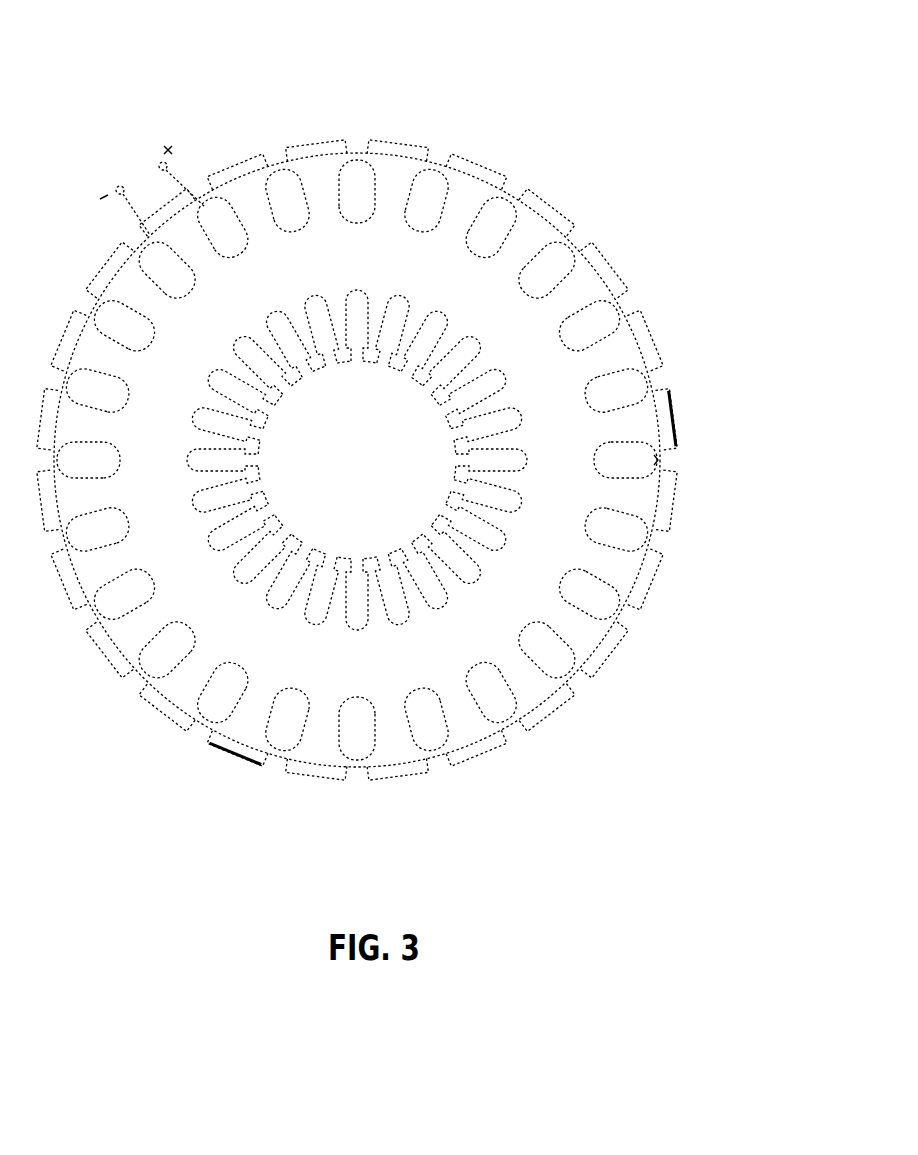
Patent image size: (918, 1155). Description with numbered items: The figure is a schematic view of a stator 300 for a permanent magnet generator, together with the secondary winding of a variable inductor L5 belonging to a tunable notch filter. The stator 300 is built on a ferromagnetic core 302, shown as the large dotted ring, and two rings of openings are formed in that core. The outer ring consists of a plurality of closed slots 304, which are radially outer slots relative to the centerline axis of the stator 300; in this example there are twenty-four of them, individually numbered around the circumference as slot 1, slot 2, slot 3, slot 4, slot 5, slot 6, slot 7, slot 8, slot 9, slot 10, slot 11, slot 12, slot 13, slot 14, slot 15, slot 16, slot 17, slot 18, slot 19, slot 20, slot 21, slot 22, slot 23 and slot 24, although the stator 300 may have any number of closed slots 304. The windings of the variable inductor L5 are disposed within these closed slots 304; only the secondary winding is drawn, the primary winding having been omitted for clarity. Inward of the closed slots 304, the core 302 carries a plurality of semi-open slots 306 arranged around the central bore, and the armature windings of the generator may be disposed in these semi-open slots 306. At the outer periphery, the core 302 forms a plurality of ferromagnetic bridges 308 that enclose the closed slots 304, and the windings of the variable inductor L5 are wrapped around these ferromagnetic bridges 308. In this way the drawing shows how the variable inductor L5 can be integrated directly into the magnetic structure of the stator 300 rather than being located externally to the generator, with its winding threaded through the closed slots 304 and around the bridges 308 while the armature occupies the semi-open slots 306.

The stator 300 is at (658, 96).
The ferromagnetic core 302 is at (357, 460).
The closed slots 304 is at (632, 345).
The semi-open slots 306 is at (587, 435).
The ferromagnetic bridges 308 is at (698, 455).
The variable inductor L5 is at (594, 719).
The closed slot 1 is at (222, 227).
The closed slot 2 is at (287, 201).
The closed slot 3 is at (357, 191).
The closed slot 4 is at (426, 201).
The closed slot 5 is at (491, 227).
The closed slot 6 is at (547, 270).
The closed slot 7 is at (589, 325).
The closed slot 8 is at (616, 390).
The closed slot 9 is at (625, 460).
The closed slot 10 is at (616, 529).
The closed slot 11 is at (589, 594).
The closed slot 12 is at (547, 650).
The closed slot 13 is at (491, 692).
The closed slot 14 is at (426, 719).
The closed slot 15 is at (357, 728).
The closed slot 16 is at (287, 719).
The closed slot 17 is at (222, 692).
The closed slot 18 is at (167, 650).
The closed slot 19 is at (124, 594).
The closed slot 20 is at (98, 529).
The closed slot 21 is at (88, 460).
The closed slot 22 is at (98, 390).
The closed slot 23 is at (124, 325).
The closed slot 24 is at (167, 270).